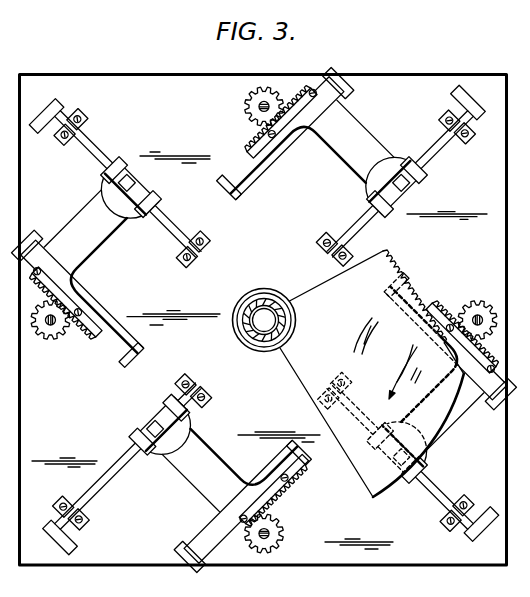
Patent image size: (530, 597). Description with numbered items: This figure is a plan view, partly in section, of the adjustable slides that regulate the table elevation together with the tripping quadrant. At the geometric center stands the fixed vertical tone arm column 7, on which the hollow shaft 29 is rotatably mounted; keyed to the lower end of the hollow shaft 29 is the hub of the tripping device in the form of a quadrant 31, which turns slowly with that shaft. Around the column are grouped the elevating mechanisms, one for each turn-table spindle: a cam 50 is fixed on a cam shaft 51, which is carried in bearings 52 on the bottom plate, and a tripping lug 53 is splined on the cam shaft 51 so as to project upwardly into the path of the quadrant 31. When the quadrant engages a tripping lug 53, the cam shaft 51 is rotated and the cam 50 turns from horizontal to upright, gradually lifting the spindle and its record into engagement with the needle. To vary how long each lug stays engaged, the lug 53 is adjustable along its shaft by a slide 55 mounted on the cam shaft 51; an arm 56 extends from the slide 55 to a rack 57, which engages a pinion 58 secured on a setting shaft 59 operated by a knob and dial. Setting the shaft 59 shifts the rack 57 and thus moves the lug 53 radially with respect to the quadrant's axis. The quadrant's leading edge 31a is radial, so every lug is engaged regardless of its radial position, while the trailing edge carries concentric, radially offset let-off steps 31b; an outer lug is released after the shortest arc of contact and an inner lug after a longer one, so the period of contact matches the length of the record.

The tone arm column 7 is at (274, 319).
The hollow shaft 29 is at (267, 300).
The tripping quadrant 31 is at (320, 363).
The leading edge 31a is at (321, 407).
The let-off steps or shoulders 31b is at (426, 292).
The cam 50 is at (63, 543).
The cam shaft 51 is at (97, 489).
The bearings 52 is at (68, 508).
The tripping lug 53 is at (153, 425).
The slide 55 is at (141, 439).
The arm 56 is at (207, 463).
The rack 57 is at (306, 466).
The pinion 58 is at (278, 519).
The setting shaft 59 is at (269, 535).